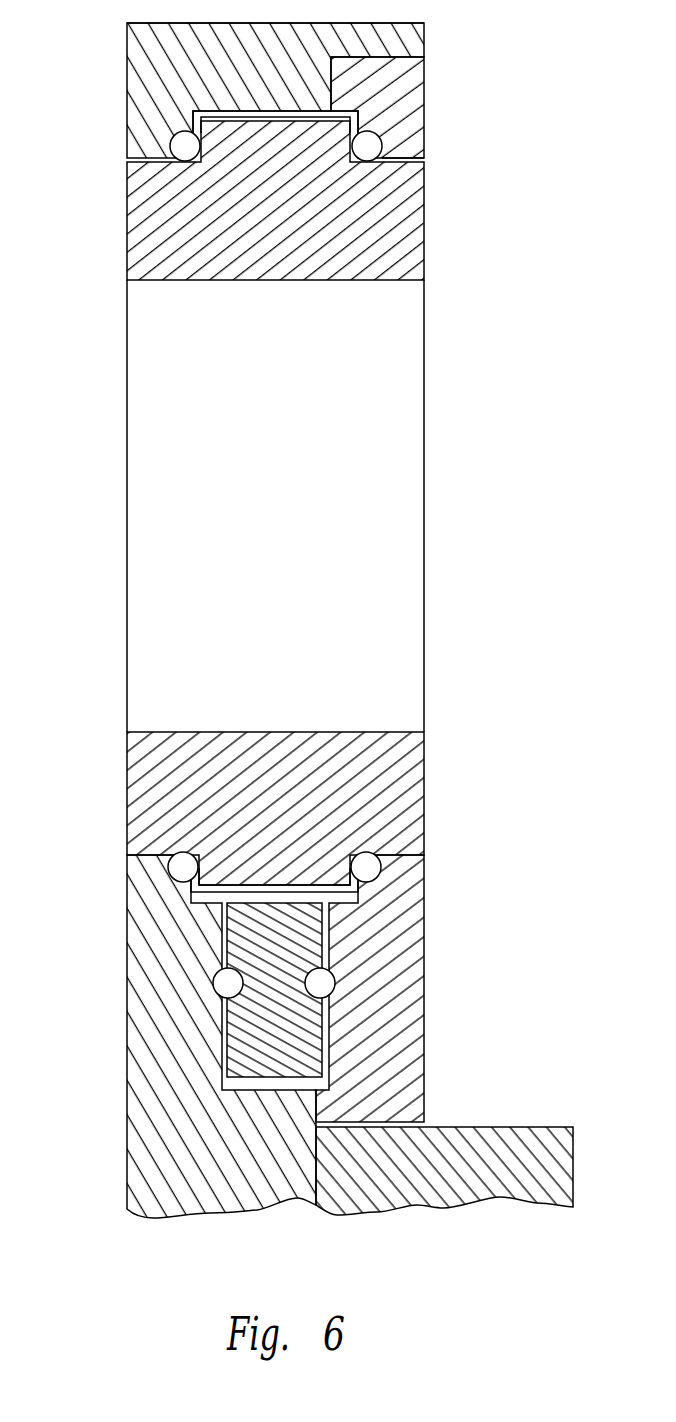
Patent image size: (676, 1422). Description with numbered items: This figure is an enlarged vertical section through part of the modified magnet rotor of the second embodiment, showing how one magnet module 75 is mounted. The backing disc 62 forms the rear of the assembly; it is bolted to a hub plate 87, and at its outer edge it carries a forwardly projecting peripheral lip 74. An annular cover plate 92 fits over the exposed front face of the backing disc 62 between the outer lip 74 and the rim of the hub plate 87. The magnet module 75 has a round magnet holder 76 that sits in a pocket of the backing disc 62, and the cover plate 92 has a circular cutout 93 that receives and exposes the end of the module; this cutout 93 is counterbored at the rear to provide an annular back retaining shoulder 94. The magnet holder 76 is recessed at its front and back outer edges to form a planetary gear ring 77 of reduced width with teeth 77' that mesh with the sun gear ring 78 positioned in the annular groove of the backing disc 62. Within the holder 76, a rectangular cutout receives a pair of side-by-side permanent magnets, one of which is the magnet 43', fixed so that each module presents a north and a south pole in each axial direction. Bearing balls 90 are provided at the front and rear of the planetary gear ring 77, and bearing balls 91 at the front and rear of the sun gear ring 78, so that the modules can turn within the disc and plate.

The backing disc 62 is at (145, 72).
The peripheral lip 74 is at (410, 43).
The annular cover plate 92 is at (407, 82).
The teeth 77' is at (348, 126).
The annular back retaining shoulders 94 is at (408, 143).
The planetary gear ring 77 is at (226, 172).
The magnet holder 76 is at (392, 222).
The magnet module 75 is at (453, 407).
The permanent magnet 43' is at (317, 506).
The bearing balls 90 is at (372, 848).
The circular cutouts 93 is at (410, 852).
The bearing balls 91 is at (215, 985).
The sun gear ring 78 is at (260, 1042).
The hub plate 87 is at (522, 1133).